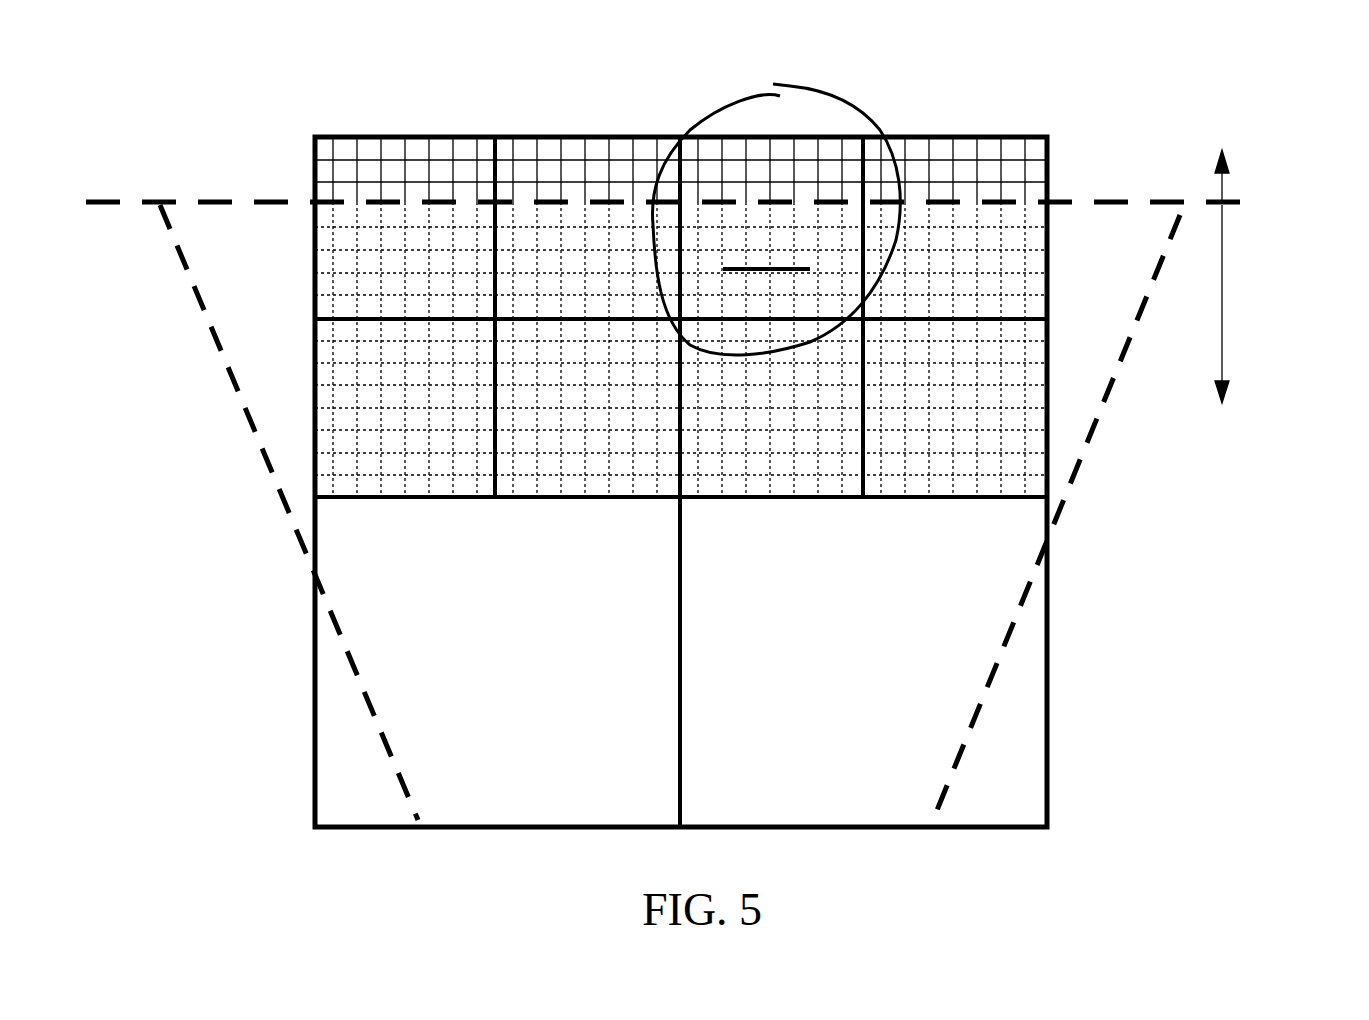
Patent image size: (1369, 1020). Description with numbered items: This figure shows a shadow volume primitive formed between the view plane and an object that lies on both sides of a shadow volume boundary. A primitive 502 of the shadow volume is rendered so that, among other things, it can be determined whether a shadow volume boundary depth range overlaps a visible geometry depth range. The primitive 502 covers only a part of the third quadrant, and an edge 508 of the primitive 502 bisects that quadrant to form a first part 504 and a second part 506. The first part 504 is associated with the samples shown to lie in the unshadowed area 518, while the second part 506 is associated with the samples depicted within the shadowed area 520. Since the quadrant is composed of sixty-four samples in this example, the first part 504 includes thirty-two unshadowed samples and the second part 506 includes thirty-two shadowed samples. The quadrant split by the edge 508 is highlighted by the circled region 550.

The primitive 502 is at (691, 482).
The first part 504 is at (841, 181).
The second part 506 is at (841, 306).
The edge 508 is at (225, 200).
The unshadowed area 518 is at (1274, 102).
The shadowed area 520 is at (1276, 468).
The highlighted quadrant Q3 550 is at (862, 110).